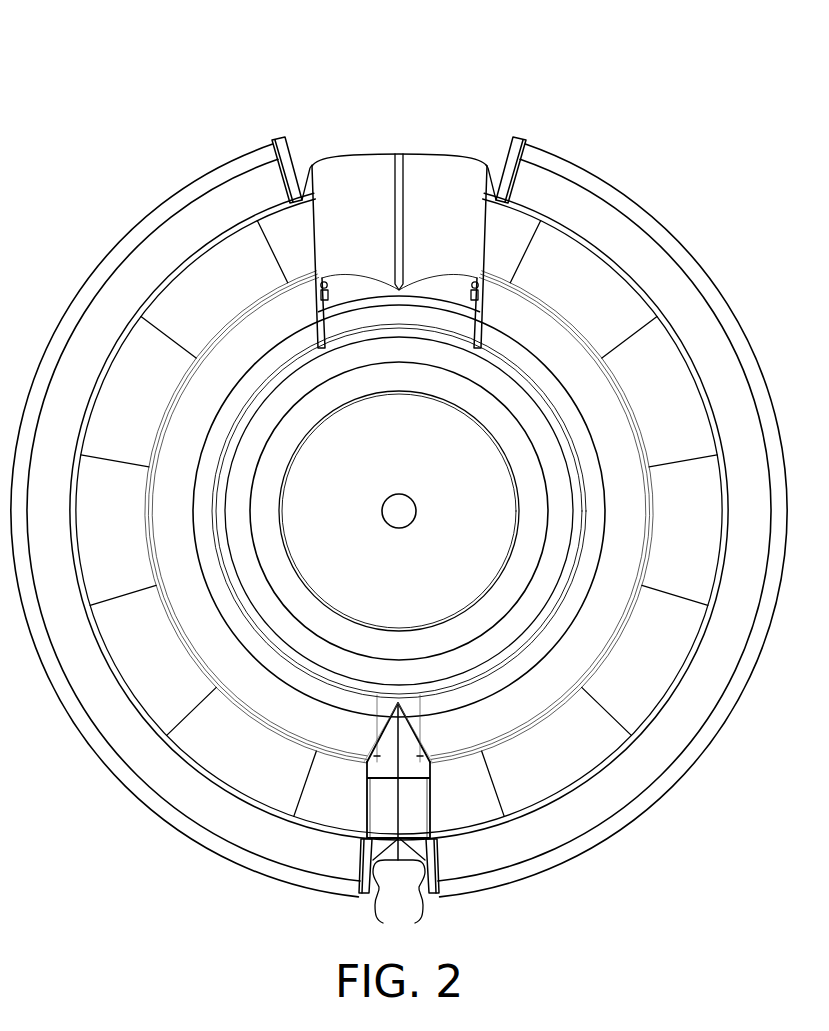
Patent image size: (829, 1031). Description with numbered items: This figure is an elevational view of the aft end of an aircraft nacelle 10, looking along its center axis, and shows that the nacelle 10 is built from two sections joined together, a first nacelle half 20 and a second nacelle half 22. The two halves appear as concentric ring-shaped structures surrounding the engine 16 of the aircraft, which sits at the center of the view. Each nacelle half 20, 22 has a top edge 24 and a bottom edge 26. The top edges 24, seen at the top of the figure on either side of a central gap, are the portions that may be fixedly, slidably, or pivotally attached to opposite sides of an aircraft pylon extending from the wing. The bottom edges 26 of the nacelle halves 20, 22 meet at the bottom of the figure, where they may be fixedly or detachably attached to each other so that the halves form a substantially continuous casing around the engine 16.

The aircraft nacelle 10 is at (674, 60).
The engine 16 is at (457, 560).
The first nacelle half 20 is at (123, 296).
The second nacelle half 22 is at (675, 296).
The top edge 24 is at (293, 157).
The bottom edge 26 is at (412, 927).